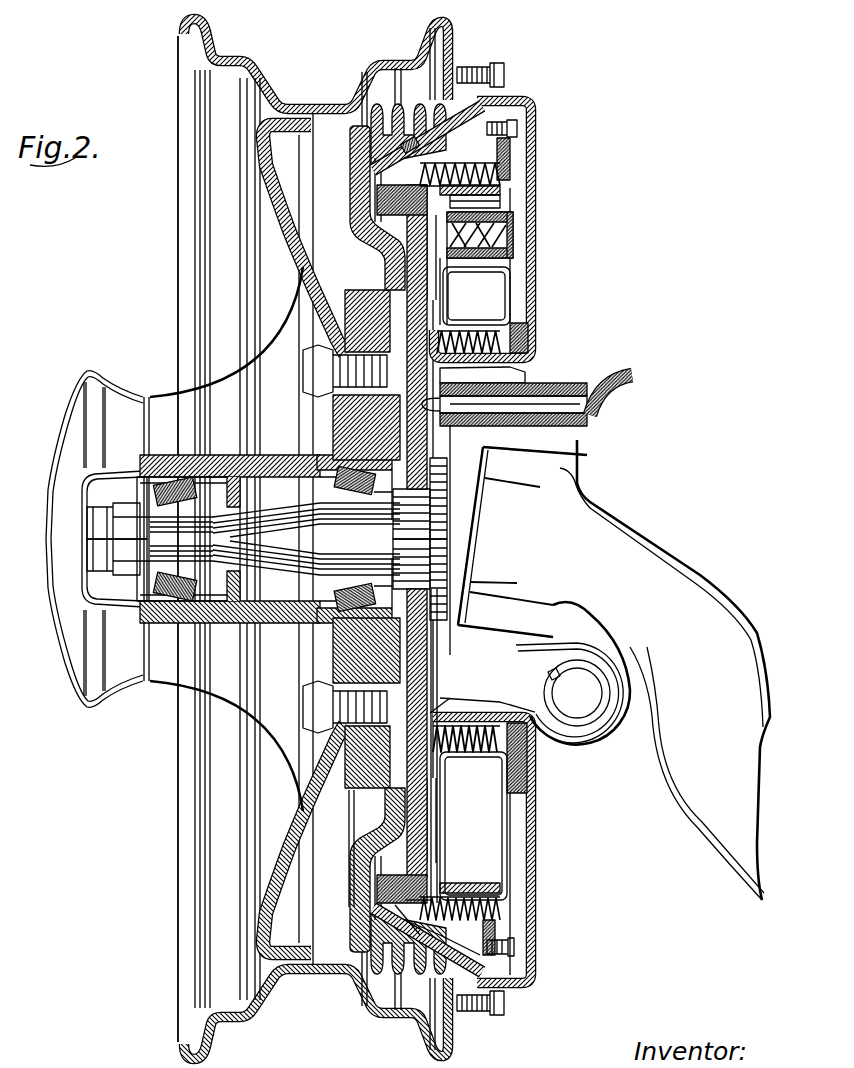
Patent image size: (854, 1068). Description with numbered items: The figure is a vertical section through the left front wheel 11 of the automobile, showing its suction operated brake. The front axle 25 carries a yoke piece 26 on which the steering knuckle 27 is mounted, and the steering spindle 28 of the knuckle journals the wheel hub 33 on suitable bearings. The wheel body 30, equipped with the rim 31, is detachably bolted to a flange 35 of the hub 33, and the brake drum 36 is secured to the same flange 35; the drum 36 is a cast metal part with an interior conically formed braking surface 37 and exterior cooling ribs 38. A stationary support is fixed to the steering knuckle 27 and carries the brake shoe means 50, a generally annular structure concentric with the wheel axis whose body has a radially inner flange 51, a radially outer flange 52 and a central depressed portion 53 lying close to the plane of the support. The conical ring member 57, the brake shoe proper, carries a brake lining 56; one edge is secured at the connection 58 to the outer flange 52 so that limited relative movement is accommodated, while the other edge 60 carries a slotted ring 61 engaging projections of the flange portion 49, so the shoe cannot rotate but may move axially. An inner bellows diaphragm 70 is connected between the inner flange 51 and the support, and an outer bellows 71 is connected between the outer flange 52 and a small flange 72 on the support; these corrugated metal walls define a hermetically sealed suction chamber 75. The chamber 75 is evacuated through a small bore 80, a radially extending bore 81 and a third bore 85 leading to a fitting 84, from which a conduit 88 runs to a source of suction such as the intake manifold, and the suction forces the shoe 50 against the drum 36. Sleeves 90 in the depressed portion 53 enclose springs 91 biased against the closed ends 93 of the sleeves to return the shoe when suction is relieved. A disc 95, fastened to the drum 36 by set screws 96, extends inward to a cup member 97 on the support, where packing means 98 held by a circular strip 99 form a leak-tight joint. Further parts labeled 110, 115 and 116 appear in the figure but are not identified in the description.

The front wheel 11 is at (175, 944).
The rim 31 is at (180, 912).
The wheel body 30 is at (292, 838).
The wheel hub 33 is at (282, 628).
The steering spindle 28 is at (298, 570).
The hub bolt 110 is at (393, 828).
The flange 35 is at (364, 748).
The small bore 80 is at (396, 258).
The radially extending bore 81 is at (392, 300).
The radially inwardly directed flange 51 is at (537, 316).
The outer flange portion 49 is at (380, 910).
The brake drum 36 is at (372, 895).
The other edge 60 is at (395, 912).
The braking surface 37 is at (385, 930).
The cooling ribs 38 is at (420, 988).
The set screws 96 is at (512, 70).
The disc 95 is at (530, 126).
The radially outwardly directed flange portion 52 is at (512, 158).
The suction chamber 75 is at (505, 193).
The radially outwardly extending flange 72 is at (460, 162).
The bellows 71 is at (438, 190).
The closed ends 93 is at (515, 243).
The sleeves 90 is at (505, 203).
The springs 91 is at (520, 228).
The guide 115 is at (450, 298).
The central depressed portion 53 is at (458, 304).
The bellows diaphragm 70 is at (512, 308).
The circular strip 99 is at (505, 780).
The brake shoe means 50 is at (502, 842).
The fitting 84 is at (535, 372).
The cup member 97 is at (530, 345).
The packing means 98 is at (530, 706).
The third bore 85 is at (452, 428).
The conduit 88 is at (632, 398).
The yoke piece 26 is at (540, 497).
The front axle 25 is at (657, 530).
The steering knuckle 27 is at (463, 520).
The nut 116 is at (445, 560).
The connection 58 is at (516, 942).
The conical ring member 57 is at (512, 972).
The slotted ring 61 is at (405, 915).
The brake lining 56 is at (446, 945).